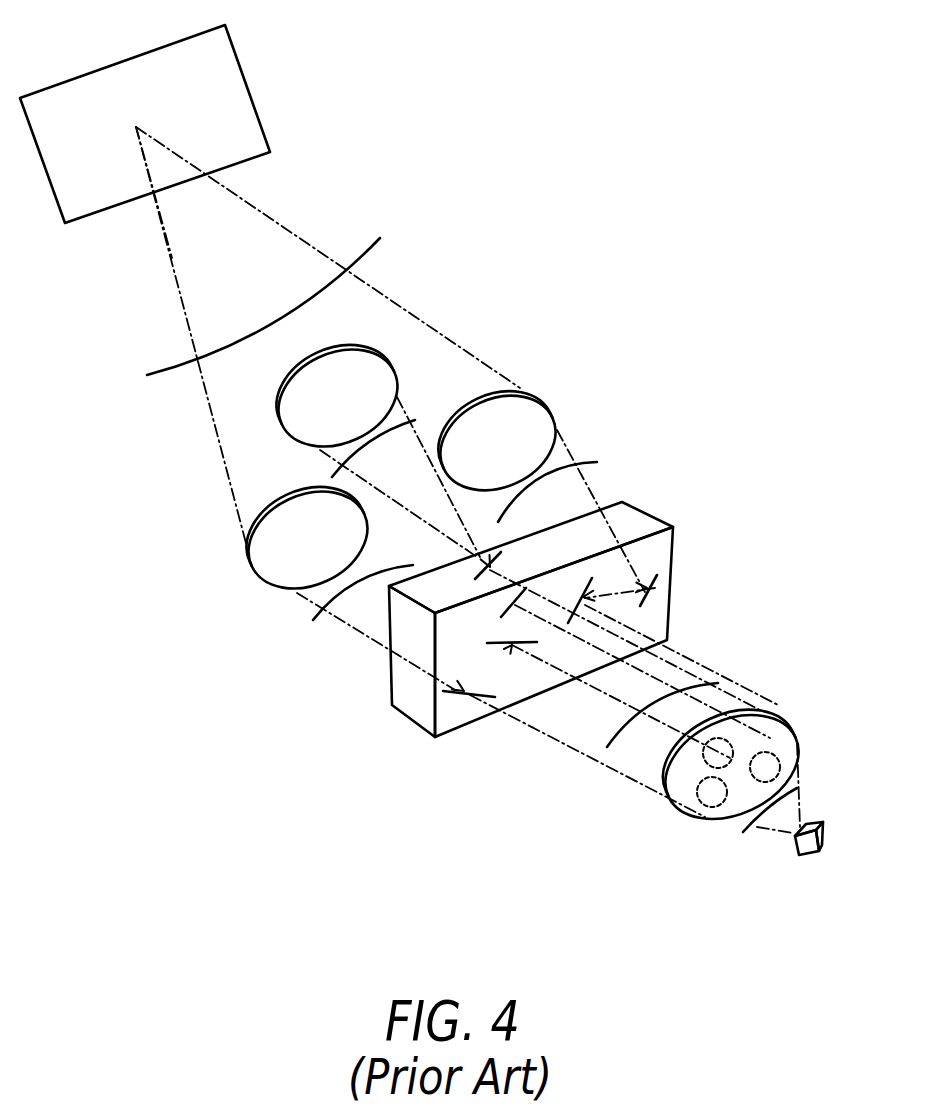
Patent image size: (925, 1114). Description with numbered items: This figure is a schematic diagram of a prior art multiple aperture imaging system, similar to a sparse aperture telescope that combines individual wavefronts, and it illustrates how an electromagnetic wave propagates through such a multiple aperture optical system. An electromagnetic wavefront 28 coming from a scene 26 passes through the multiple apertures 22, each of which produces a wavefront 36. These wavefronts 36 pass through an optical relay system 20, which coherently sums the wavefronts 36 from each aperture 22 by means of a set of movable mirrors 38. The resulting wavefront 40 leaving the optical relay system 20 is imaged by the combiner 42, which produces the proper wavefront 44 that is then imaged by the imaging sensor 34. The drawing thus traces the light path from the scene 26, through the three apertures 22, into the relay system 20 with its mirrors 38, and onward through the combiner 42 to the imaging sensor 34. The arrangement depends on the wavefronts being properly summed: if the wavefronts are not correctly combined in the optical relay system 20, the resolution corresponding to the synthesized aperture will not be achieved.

The scene 26 is at (97, 68).
The electromagnetic wavefront 28 is at (356, 256).
The apertures 22 is at (378, 348).
The wavefronts 36 is at (416, 418).
The optical relay system 20 is at (410, 712).
The movable mirrors 38 is at (657, 580).
The resulting wavefront 40 is at (612, 738).
The combiner 42 is at (700, 820).
The proper wavefront 44 is at (806, 794).
The imaging sensor 34 is at (800, 853).